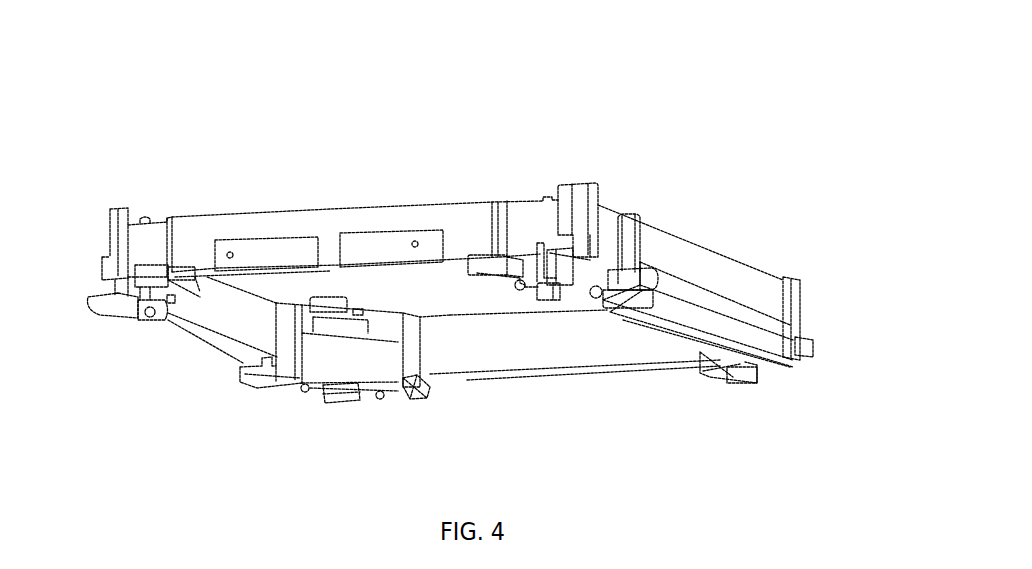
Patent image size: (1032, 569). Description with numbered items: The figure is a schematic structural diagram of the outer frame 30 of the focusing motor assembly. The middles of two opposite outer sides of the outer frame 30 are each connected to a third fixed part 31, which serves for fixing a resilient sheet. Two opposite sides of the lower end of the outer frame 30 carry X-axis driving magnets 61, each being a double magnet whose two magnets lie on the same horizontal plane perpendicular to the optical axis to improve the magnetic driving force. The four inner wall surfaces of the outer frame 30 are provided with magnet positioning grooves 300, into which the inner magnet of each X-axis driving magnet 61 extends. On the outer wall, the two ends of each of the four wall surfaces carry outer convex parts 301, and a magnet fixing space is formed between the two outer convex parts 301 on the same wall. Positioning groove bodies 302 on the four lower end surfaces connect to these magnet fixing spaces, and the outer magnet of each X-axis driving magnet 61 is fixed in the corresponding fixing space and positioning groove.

The outer frame 30 is at (460, 203).
The third fixed part 31 is at (275, 252).
The X-axis driving magnet 61 is at (717, 323).
The magnet positioning groove 300 is at (598, 350).
The outer convex part 301 is at (650, 277).
The positioning groove body 302 is at (420, 380).